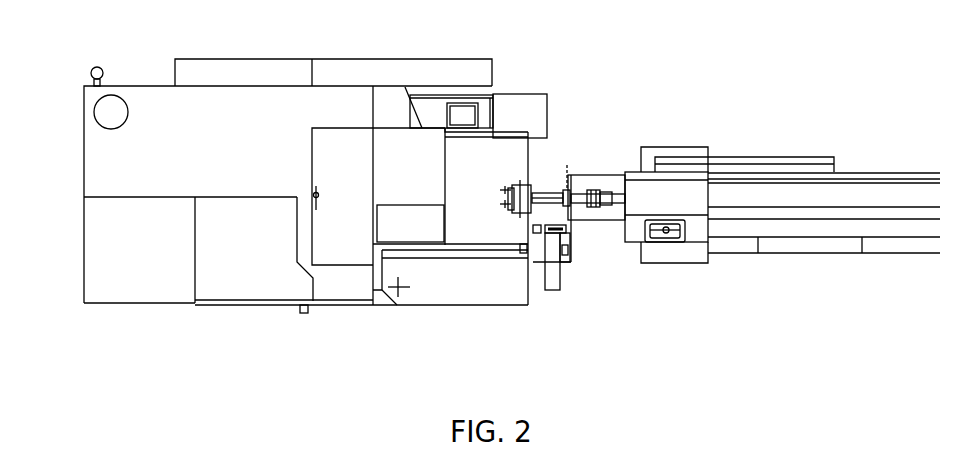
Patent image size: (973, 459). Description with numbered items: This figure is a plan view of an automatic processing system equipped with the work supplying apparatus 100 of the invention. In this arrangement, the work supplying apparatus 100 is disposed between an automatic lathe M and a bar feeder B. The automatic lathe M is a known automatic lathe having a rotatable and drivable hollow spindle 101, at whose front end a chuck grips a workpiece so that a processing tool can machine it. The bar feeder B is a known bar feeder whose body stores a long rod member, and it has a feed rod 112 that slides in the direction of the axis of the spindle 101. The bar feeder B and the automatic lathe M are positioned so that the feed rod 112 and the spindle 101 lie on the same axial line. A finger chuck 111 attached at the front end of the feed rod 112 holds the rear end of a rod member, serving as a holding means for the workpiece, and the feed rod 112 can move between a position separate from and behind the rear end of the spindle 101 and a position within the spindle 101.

The automatic lathe M is at (331, 43).
The spindle 101 is at (485, 190).
The work supplying apparatus 100 is at (567, 280).
The finger chuck 111 is at (567, 185).
The feed rod 112 is at (611, 187).
The bar feeder B is at (857, 188).